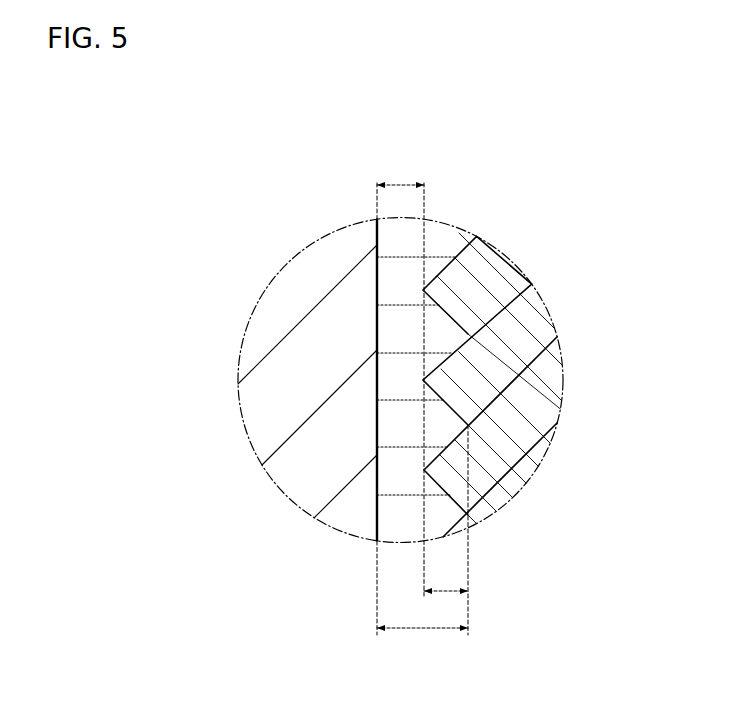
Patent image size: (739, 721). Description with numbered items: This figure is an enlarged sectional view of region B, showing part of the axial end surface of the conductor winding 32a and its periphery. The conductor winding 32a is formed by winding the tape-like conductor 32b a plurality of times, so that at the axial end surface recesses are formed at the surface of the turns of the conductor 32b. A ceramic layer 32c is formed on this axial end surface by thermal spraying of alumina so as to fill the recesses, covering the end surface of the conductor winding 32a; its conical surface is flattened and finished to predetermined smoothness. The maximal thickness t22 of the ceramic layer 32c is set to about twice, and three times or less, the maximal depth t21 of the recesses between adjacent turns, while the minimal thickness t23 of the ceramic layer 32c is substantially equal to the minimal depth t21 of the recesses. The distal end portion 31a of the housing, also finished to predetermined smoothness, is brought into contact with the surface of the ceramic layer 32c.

The region B is at (306, 245).
The distal end portion 31a is at (258, 405).
The conductor winding 32a is at (553, 385).
The tape-like conductor 32b is at (490, 277).
The ceramic layer 32c is at (392, 520).
The depth of the recesses t21 is at (446, 530).
The maximal value of thickness of the ceramic layer t22 is at (422, 588).
The minimal value of thickness of the ceramic layer t23 is at (400, 377).